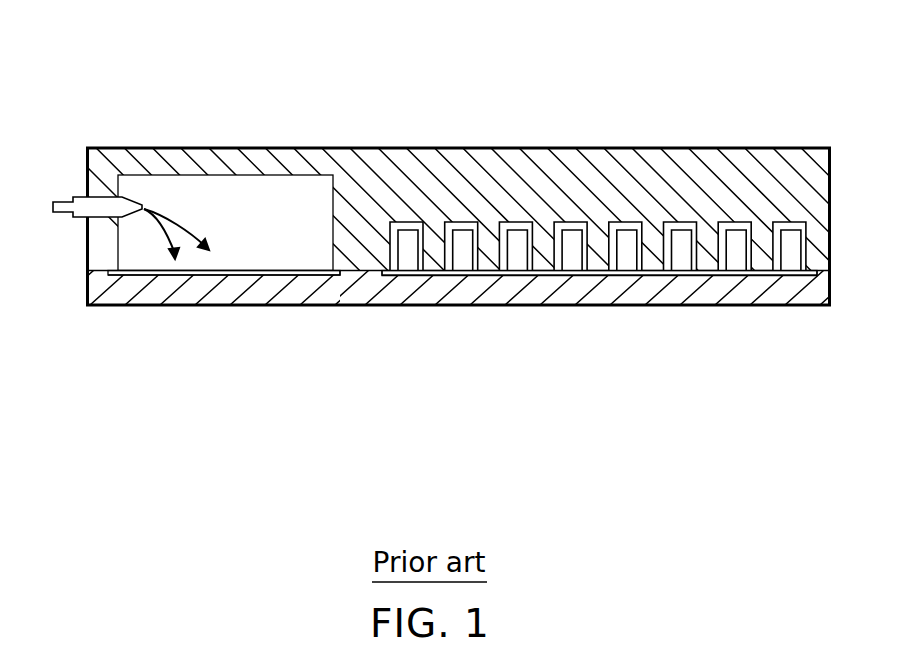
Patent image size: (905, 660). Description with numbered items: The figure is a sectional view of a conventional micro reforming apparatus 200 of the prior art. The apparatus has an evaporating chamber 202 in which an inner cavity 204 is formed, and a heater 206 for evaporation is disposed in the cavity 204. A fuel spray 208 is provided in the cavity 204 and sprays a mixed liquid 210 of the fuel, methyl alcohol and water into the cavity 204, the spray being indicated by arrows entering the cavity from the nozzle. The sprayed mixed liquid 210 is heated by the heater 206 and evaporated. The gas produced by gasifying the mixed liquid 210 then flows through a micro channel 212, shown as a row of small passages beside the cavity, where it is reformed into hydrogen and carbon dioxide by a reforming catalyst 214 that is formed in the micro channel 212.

The reforming apparatus 200 is at (801, 90).
The evaporating chamber 202 is at (147, 237).
The inner cavity 204 is at (298, 236).
The heater 206 is at (239, 275).
The fuel spray 208 is at (86, 220).
The mixed liquid 210 is at (183, 222).
The micro channel 212 is at (570, 258).
The reforming catalyst 214 is at (515, 230).